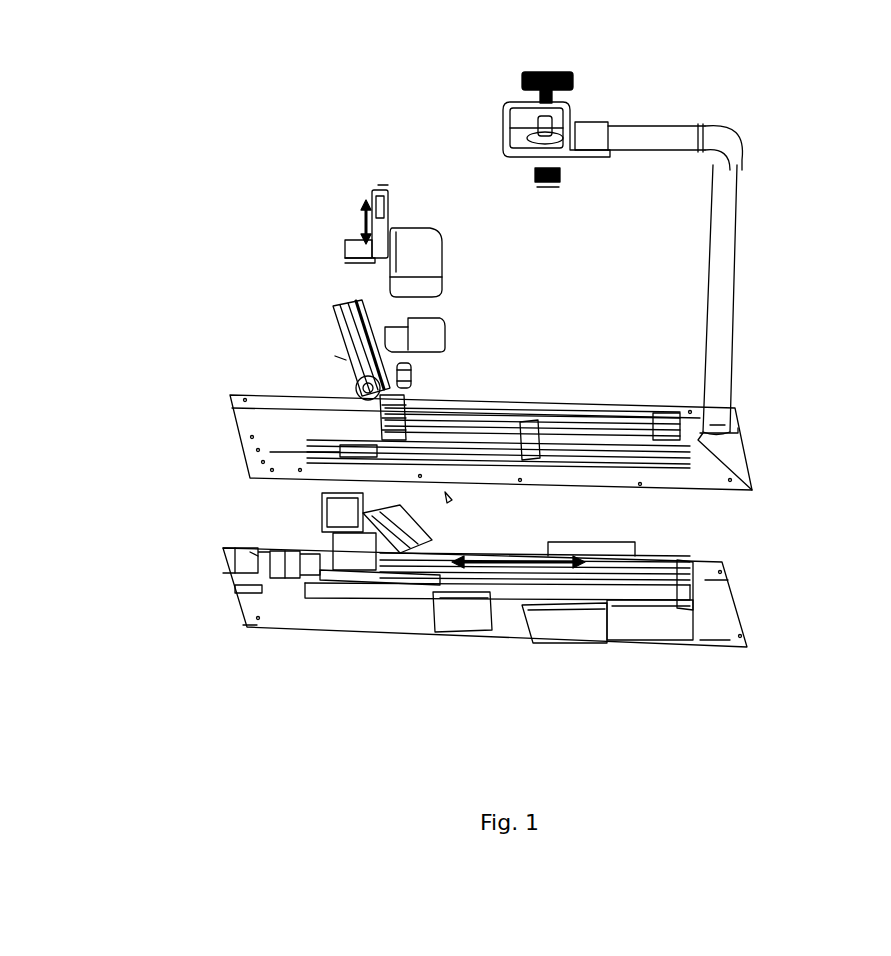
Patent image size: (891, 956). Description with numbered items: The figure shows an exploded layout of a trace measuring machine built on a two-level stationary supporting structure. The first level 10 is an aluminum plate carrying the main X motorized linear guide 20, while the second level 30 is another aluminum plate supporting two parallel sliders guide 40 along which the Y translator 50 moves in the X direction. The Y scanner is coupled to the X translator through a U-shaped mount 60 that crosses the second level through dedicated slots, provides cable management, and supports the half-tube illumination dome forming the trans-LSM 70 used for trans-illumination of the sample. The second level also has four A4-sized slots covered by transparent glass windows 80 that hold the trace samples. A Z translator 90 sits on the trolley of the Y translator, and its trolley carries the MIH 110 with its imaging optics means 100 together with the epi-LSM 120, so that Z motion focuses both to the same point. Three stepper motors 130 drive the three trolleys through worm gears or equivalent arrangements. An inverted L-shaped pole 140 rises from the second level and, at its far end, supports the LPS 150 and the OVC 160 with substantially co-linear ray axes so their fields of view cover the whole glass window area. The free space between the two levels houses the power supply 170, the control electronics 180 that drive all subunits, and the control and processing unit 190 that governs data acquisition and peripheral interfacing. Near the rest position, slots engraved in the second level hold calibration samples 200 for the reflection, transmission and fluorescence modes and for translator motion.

The first level 10 is at (729, 618).
The X motorized linear guide 20 is at (595, 560).
The second level 30 is at (715, 463).
The parallel sliders guide 40 is at (624, 408).
The Y translator 50 is at (338, 307).
The U-shaped mount 60 is at (320, 528).
The trans-LSM 70 is at (367, 563).
The transparent glass windows 80 is at (552, 430).
The Z translator 90 is at (352, 203).
The imaging optics means 100 is at (414, 381).
The MIH 110 is at (422, 248).
The epi-LSM 120 is at (432, 322).
The stepper motors 130 is at (386, 188).
The inverted L-shaped pole 140 is at (727, 278).
The LPS 150 is at (563, 173).
The OVC 160 is at (545, 69).
The power supply 170 is at (452, 612).
The control electronics 180 is at (566, 632).
The control and processing unit 190 is at (668, 622).
The calibration samples 200 is at (313, 417).